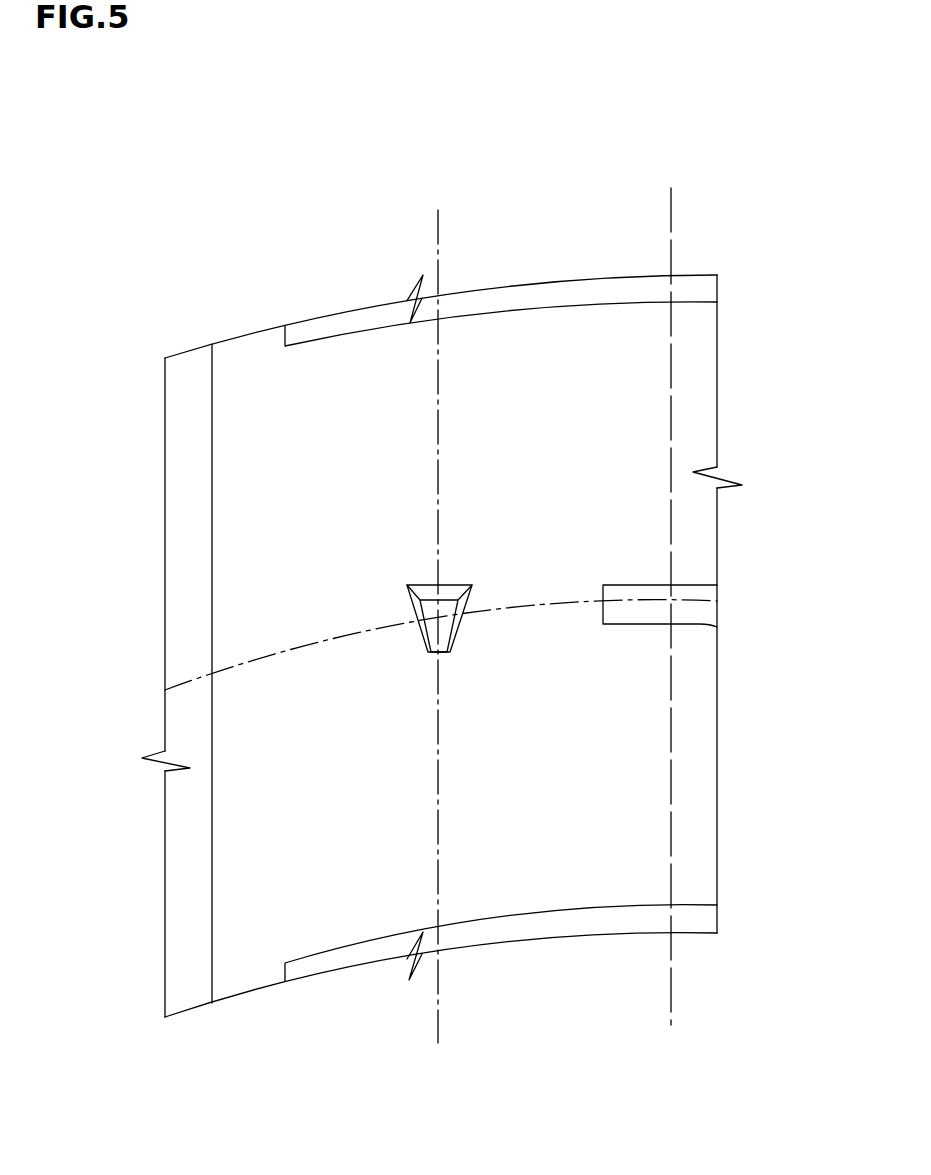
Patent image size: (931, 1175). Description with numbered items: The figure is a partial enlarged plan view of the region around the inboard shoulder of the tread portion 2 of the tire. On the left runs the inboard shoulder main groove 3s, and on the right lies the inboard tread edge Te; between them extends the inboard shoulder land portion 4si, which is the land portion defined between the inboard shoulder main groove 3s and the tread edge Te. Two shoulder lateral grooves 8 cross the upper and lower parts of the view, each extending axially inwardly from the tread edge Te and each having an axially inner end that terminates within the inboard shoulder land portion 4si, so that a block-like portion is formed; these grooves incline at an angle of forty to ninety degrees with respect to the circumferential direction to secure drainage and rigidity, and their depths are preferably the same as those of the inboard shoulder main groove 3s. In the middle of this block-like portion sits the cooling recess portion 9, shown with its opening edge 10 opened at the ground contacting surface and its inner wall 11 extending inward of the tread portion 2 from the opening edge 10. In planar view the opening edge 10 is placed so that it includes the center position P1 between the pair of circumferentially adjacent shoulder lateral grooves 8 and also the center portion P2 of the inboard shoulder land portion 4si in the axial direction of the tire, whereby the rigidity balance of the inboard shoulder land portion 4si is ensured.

The tread portion 2 is at (245, 324).
The inboard shoulder main groove 3s is at (197, 484).
The inboard shoulder land portion 4si is at (348, 897).
The shoulder lateral groove 8 is at (523, 303).
The cooling recess portion 9 is at (800, 498).
The opening edge 10 is at (465, 626).
The inner wall 11 is at (442, 606).
The center position P1 is at (197, 675).
The center portion P2 is at (440, 1007).
The tread edge Te is at (671, 587).